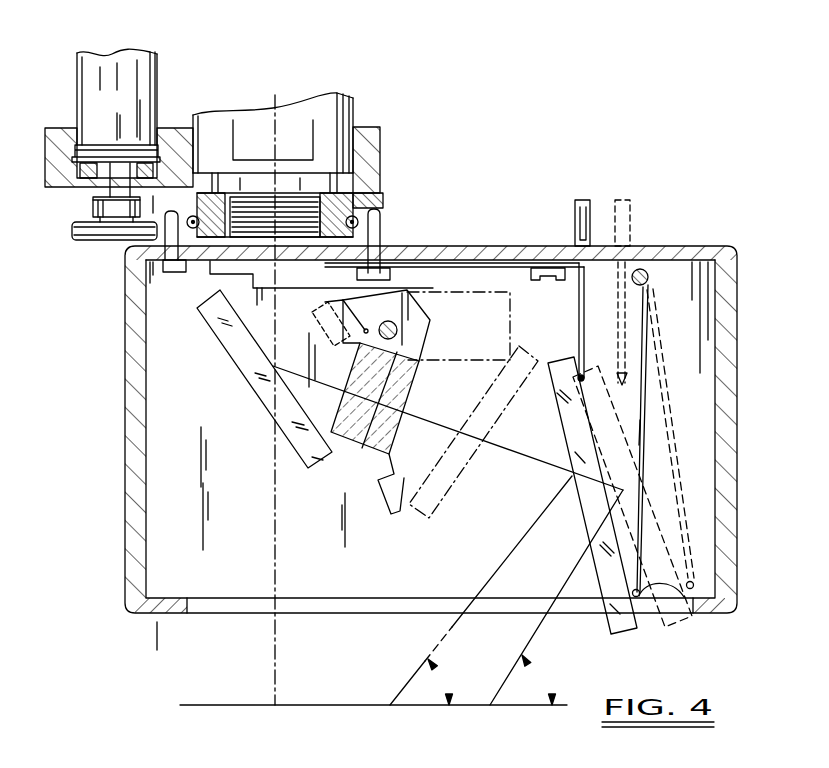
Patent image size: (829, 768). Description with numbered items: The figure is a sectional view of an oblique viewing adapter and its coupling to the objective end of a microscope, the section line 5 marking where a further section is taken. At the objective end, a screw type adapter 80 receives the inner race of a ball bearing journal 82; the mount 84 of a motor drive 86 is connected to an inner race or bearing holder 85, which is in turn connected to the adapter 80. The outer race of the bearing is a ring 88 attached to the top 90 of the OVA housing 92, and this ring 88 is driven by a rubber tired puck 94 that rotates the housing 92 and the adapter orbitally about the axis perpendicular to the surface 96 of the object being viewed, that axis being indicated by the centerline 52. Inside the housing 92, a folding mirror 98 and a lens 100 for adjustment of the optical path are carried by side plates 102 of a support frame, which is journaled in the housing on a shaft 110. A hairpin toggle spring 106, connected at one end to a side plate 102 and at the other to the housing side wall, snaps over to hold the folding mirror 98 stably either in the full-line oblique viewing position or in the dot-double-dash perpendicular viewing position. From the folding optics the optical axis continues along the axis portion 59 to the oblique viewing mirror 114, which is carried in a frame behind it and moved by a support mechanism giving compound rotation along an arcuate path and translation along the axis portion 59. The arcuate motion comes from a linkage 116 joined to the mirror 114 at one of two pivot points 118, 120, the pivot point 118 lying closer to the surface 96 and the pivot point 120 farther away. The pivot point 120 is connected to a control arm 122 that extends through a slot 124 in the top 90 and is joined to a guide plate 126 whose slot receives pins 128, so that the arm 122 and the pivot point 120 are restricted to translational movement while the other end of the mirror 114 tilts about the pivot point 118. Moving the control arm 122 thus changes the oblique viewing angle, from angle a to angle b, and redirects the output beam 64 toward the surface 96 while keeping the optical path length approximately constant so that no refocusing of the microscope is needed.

The section line 5- 5 is at (146, 205).
The optical axis 52 is at (277, 567).
The axis portion 59 is at (510, 451).
The output beam 64 is at (530, 638).
The adapter 80 is at (353, 123).
The ball bearing journal 82 is at (363, 210).
The mount 84 is at (53, 140).
The bearing holder 85 is at (373, 150).
The motor drive 86 is at (88, 84).
The ring 88 is at (380, 210).
The top 90 is at (440, 247).
The OVA housing 92 is at (670, 237).
The rubber tired puck 94 is at (74, 238).
The surface 96 is at (288, 705).
The folding mirror 98 is at (231, 362).
The lens 100 is at (405, 383).
The side plates 102 is at (406, 292).
The hairpin toggle spring 106 is at (328, 283).
The shaft 110 is at (398, 329).
The oblique viewing mirror 114 is at (628, 633).
The linkage 116 is at (646, 431).
The pivot point 118 is at (659, 596).
The pivot point 120 is at (582, 377).
The control arm 122 is at (578, 303).
The slot 124 is at (598, 250).
The guide plate 126 is at (499, 248).
The pins 128 is at (378, 229).